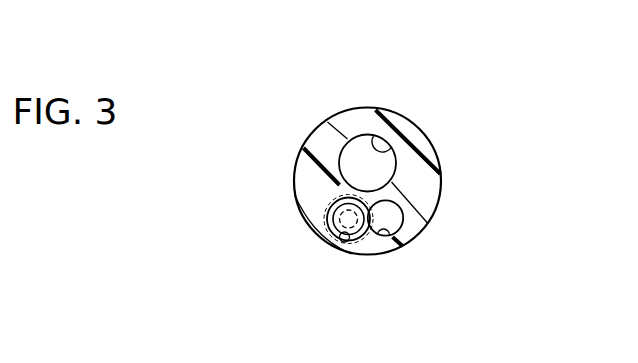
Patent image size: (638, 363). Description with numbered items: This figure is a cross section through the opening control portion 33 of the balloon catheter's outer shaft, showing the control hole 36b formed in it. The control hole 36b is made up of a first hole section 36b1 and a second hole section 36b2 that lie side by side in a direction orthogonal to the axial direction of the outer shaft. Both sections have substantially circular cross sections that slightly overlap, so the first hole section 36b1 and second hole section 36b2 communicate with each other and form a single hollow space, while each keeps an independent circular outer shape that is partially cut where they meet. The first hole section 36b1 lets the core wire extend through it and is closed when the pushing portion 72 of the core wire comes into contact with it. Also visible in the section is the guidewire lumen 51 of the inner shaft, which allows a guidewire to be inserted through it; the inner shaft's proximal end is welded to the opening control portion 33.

The opening control portion 33 is at (352, 120).
The guidewire lumen 51 is at (392, 147).
The pushing portion 72 is at (330, 222).
The control hole 36b is at (367, 277).
The first hole section 36b1 is at (348, 243).
The second hole section 36b2 is at (397, 256).